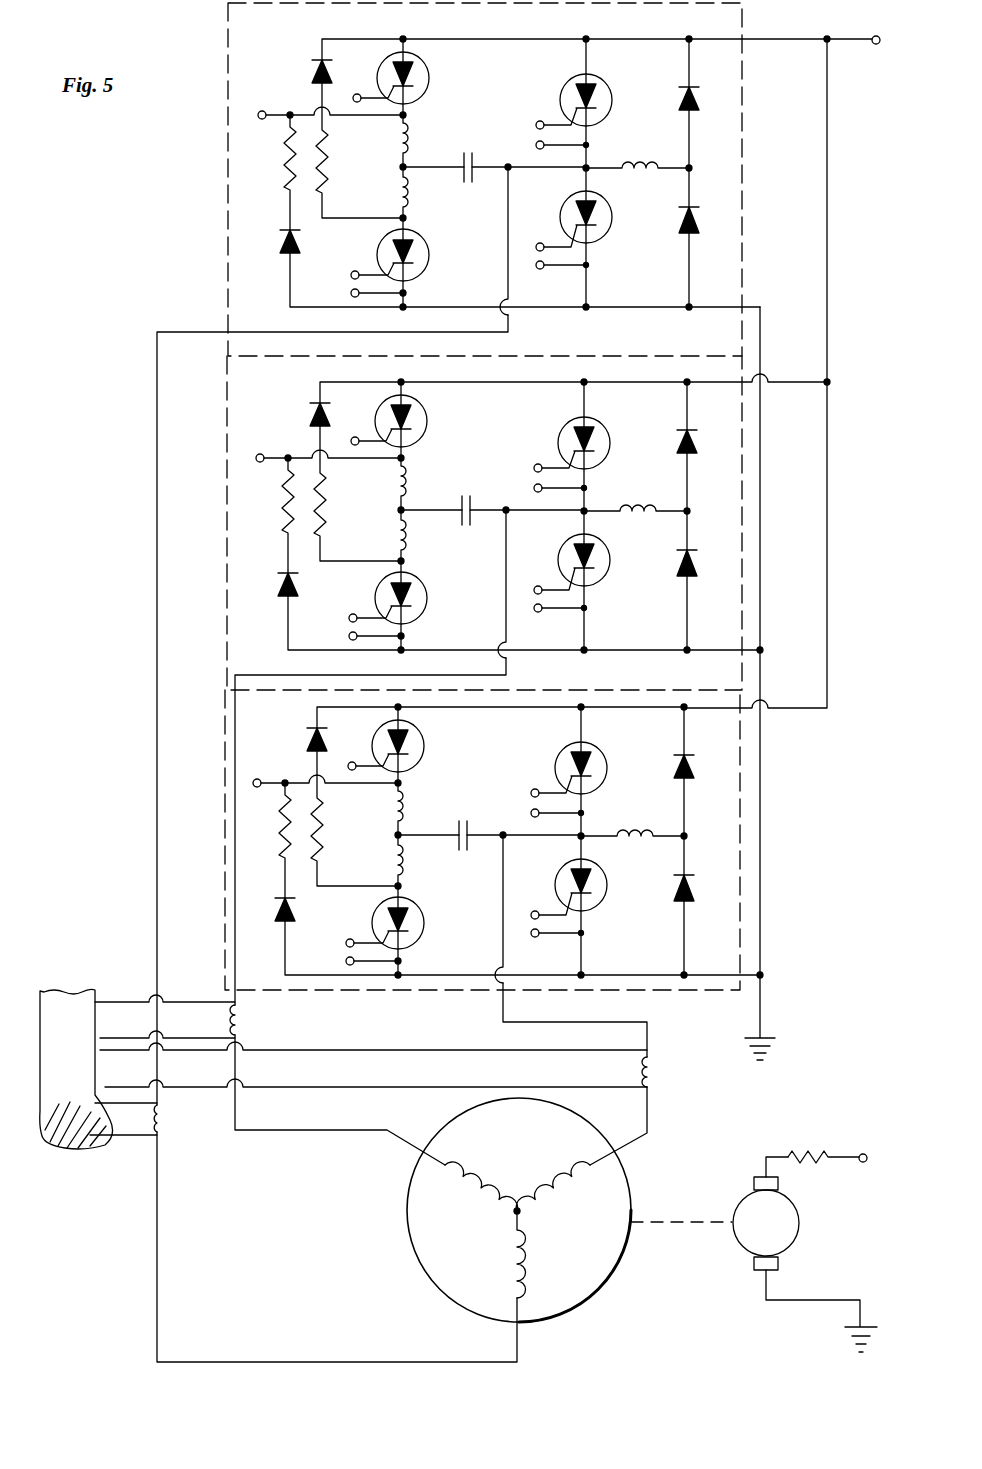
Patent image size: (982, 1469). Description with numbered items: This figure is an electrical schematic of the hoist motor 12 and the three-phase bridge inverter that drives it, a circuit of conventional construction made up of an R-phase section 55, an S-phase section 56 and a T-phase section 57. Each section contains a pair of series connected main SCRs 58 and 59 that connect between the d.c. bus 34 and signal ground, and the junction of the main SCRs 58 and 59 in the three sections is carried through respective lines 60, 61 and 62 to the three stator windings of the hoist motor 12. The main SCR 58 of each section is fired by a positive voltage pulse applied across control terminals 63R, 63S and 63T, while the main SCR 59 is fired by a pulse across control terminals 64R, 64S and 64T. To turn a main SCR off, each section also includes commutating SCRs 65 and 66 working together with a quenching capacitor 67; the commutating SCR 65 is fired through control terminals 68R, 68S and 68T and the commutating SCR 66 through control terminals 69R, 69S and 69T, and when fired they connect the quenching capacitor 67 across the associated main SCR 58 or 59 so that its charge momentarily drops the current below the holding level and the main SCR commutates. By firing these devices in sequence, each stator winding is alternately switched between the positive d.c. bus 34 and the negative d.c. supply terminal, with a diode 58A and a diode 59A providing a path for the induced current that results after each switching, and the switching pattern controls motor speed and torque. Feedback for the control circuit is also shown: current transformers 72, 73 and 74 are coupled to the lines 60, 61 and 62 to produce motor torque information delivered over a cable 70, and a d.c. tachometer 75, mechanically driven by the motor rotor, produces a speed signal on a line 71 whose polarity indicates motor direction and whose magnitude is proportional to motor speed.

The hoist motor 12 is at (407, 1221).
The d.c. bus 34 is at (871, 35).
The R-phase section 55 is at (228, 195).
The S-phase section 56 is at (228, 462).
The T-phase section 57 is at (225, 830).
The main SCR 58 is at (610, 90).
The diode 58A is at (672, 124).
The main SCR 59 is at (610, 221).
The diode 59A is at (688, 234).
The line 60 is at (157, 377).
The line 61 is at (234, 712).
The line 62 is at (649, 1032).
The control terminals 63R is at (536, 124).
The control terminals 63S is at (533, 465).
The control terminals 63T is at (537, 788).
The control terminals 64R is at (536, 252).
The control terminals 64S is at (556, 615).
The control terminals 64T is at (553, 940).
The commutating SCR 65 is at (429, 79).
The commutating SCR 66 is at (429, 245).
The quenching capacitor 67 is at (467, 154).
The control terminals 68R is at (261, 111).
The control terminals 68S is at (309, 424).
The control terminals 68T is at (306, 749).
The control terminals 69R is at (355, 275).
The control terminals 69S is at (355, 613).
The control terminals 69T is at (359, 934).
The cable 70 is at (68, 992).
The line 71 is at (865, 1152).
The current transformer 72 is at (163, 1132).
The current transformer 73 is at (241, 1016).
The current transformer 74 is at (652, 1087).
The d.c. tachometer 75 is at (740, 1198).